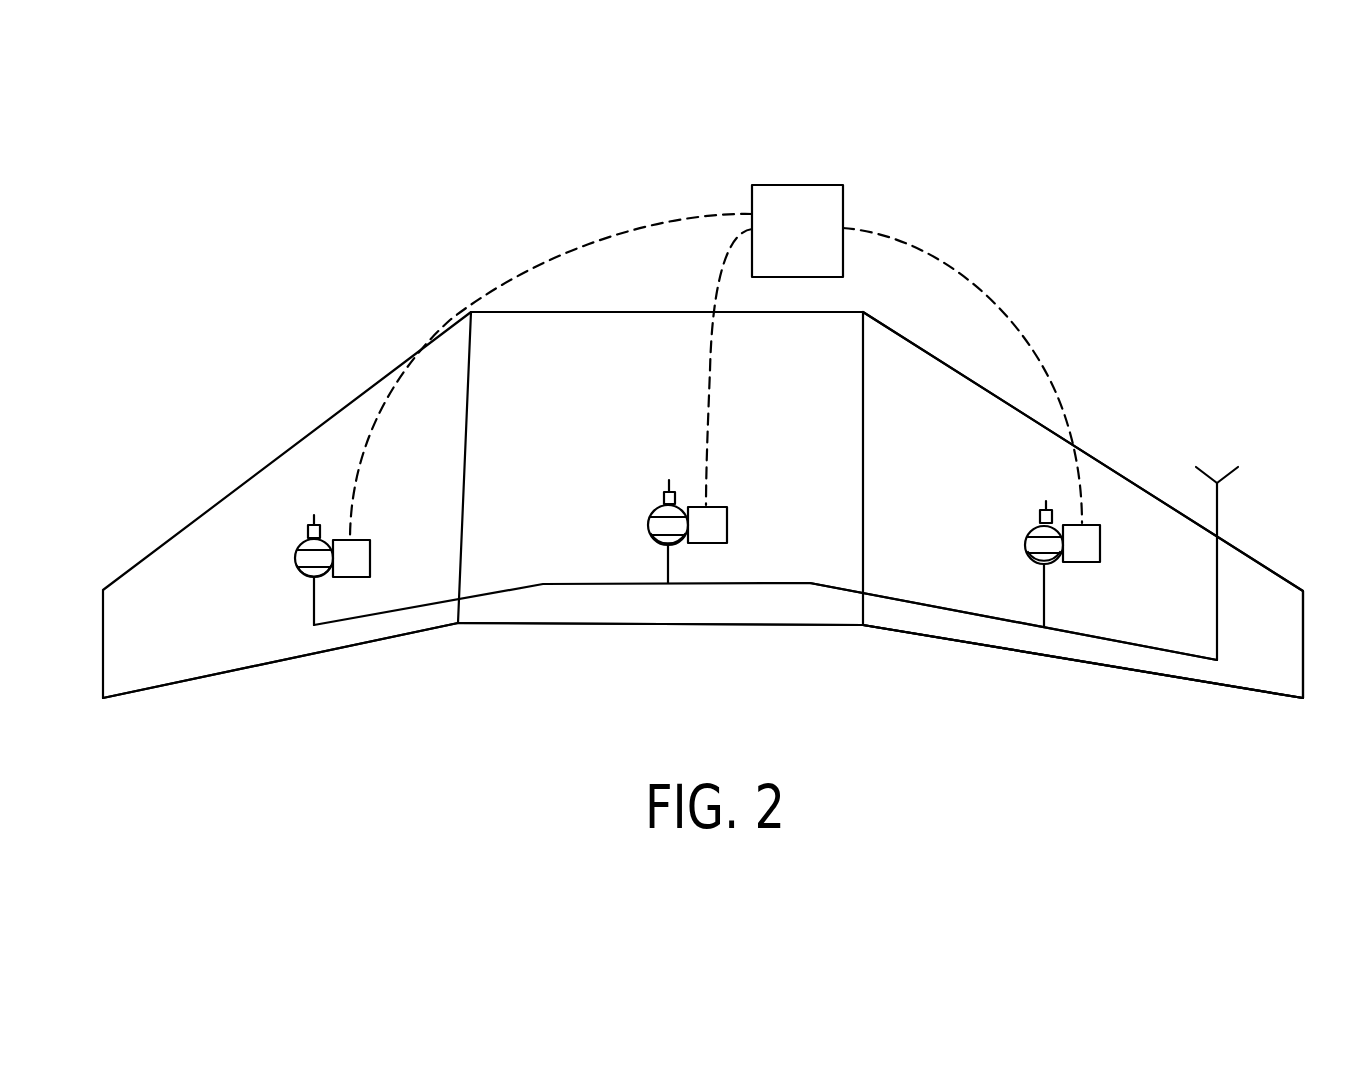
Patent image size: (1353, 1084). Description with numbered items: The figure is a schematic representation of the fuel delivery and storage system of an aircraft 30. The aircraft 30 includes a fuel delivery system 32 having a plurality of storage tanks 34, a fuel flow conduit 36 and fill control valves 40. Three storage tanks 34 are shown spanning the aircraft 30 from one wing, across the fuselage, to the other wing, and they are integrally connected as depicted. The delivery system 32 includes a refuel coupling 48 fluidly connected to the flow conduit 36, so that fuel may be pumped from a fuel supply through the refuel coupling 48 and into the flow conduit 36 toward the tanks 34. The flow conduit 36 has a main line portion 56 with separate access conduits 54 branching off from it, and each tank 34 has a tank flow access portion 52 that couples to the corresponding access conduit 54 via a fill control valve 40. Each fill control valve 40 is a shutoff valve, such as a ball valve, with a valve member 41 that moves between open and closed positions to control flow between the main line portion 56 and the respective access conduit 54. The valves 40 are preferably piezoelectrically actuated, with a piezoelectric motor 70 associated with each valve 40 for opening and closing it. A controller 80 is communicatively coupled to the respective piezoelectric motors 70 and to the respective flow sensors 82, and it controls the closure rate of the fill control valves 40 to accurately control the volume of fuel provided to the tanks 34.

The aircraft 30 is at (1176, 379).
The fuel delivery system 32 is at (1061, 594).
The storage tanks 34 is at (198, 648).
The fuel flow conduit 36 is at (493, 597).
The fill control valve 40 is at (300, 540).
The valve member 41 is at (307, 578).
The refuel coupling 48 is at (1238, 470).
The tank flow access portion 52 is at (325, 493).
The access conduit 54 is at (313, 603).
The main line portion 56 is at (930, 607).
The piezoelectric motor 70 is at (355, 578).
The controller 80 is at (843, 203).
The flow sensor 82 is at (303, 527).